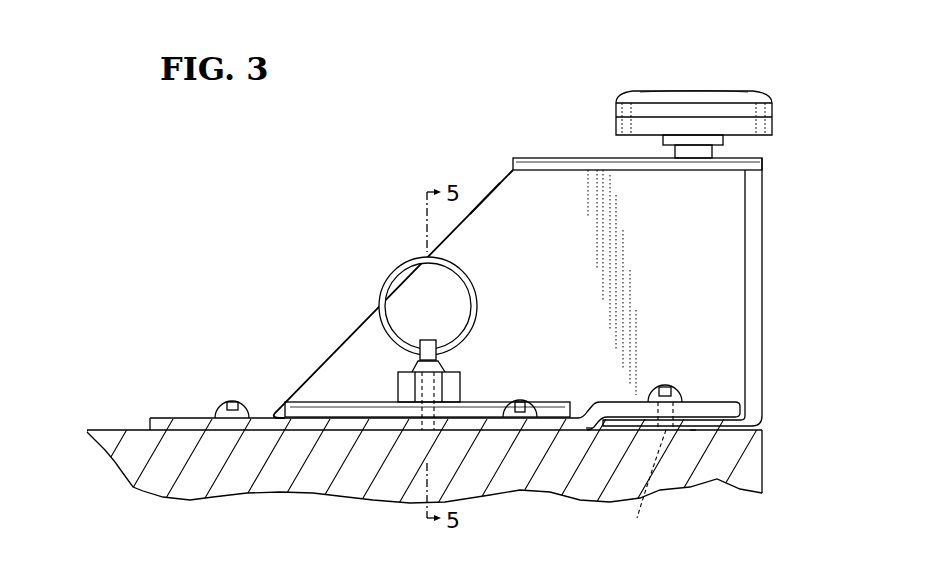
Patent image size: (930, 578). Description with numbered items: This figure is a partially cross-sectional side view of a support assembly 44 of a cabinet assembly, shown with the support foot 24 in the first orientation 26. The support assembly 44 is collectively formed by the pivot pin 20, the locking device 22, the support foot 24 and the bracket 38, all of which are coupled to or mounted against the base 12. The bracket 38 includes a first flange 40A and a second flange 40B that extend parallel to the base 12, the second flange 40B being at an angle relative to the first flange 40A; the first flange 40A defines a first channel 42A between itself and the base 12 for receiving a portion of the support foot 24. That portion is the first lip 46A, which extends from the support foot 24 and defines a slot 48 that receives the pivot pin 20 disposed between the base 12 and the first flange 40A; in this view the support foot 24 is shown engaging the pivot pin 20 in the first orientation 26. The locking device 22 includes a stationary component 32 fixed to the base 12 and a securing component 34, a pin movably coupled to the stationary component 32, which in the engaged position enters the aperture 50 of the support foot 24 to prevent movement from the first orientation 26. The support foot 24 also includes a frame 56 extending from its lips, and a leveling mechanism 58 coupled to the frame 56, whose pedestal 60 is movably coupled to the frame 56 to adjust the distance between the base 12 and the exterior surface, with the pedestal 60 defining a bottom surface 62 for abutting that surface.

The base 12 is at (141, 473).
The pivot pin 20 is at (648, 400).
The locking device 22 is at (390, 371).
The support foot 24 is at (531, 155).
The first orientation 26 is at (793, 198).
The stationary component 32 is at (450, 392).
The securing component 34 is at (428, 340).
The bracket 38 is at (177, 427).
The first flange 40A is at (715, 410).
The second flange 40B is at (308, 410).
The first channel 42A is at (589, 430).
The support assembly 44 is at (375, 168).
The first lip 46A is at (693, 430).
The slot 48 is at (639, 484).
The aperture 50 is at (430, 430).
The frame 56 is at (511, 222).
The leveling mechanism 58 is at (638, 90).
The pedestal 60 is at (672, 110).
The bottom surface 62 is at (710, 88).